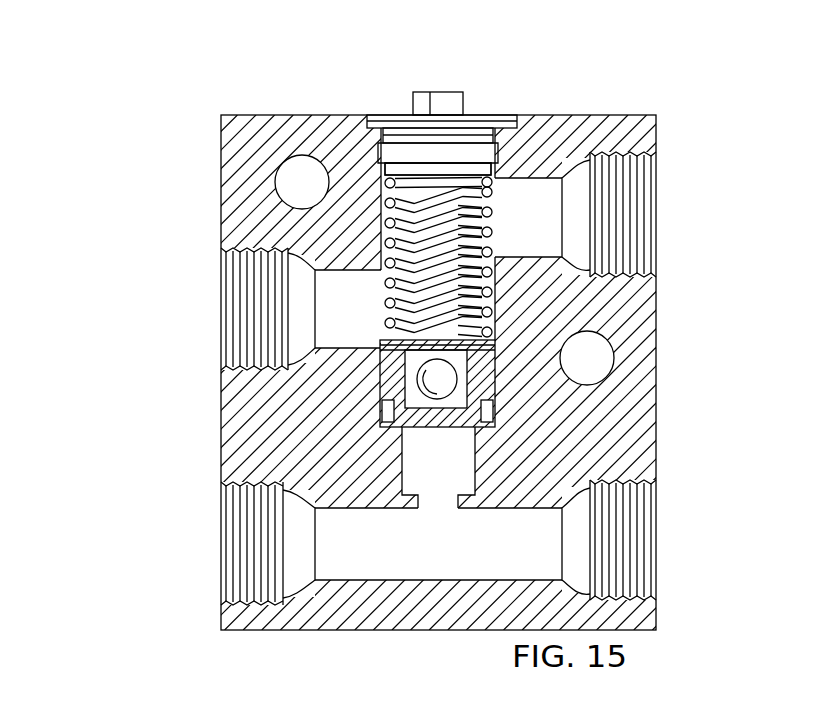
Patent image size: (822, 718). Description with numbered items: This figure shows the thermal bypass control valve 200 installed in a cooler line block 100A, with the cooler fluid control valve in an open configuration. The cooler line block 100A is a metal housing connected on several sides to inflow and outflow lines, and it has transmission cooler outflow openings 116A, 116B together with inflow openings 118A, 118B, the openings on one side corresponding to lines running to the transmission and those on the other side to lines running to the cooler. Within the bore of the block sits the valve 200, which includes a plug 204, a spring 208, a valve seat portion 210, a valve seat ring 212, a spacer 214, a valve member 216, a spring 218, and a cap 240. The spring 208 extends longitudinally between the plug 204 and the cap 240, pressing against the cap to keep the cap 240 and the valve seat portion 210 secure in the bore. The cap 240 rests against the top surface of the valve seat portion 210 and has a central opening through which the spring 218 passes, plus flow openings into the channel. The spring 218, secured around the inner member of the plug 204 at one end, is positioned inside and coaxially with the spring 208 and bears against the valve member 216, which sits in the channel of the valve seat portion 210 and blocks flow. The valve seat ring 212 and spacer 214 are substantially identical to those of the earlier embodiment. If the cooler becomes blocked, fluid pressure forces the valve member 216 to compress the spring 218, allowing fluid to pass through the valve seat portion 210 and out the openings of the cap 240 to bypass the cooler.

The cooler line block 100A is at (126, 208).
The transmission cooler outflow opening 116A is at (221, 308).
The transmission cooler outflow opening 116B is at (656, 212).
The inflow opening 118A is at (221, 552).
The inflow opening 118B is at (656, 572).
The thermal bypass control valve 200 is at (398, 100).
The plug 204 is at (468, 100).
The spring 208 is at (387, 203).
The spring 218 is at (387, 260).
The valve seat portion 210 is at (390, 378).
The valve seat ring 212 is at (393, 410).
The spacer 214 is at (492, 420).
The cap 240 is at (492, 343).
The valve member 216 is at (437, 399).